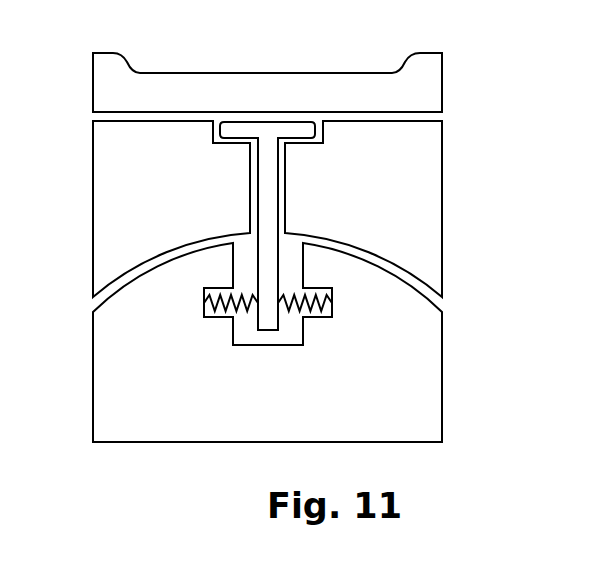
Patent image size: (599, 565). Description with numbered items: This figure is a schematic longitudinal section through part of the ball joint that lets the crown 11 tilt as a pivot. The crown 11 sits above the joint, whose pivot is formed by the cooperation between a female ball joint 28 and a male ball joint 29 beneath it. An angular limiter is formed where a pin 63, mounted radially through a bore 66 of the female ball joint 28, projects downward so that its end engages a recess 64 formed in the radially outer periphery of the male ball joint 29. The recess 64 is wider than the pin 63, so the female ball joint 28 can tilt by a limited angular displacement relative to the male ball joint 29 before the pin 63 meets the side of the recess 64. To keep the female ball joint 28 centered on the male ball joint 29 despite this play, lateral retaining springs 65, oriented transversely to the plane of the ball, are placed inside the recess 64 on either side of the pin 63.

The crown 11 is at (302, 90).
The female ball joint 28 is at (397, 178).
The male ball joint 29 is at (141, 383).
The pin 63 is at (267, 172).
The recess 64 is at (290, 265).
The lateral retaining springs 65 is at (328, 307).
The bore 66 is at (252, 202).